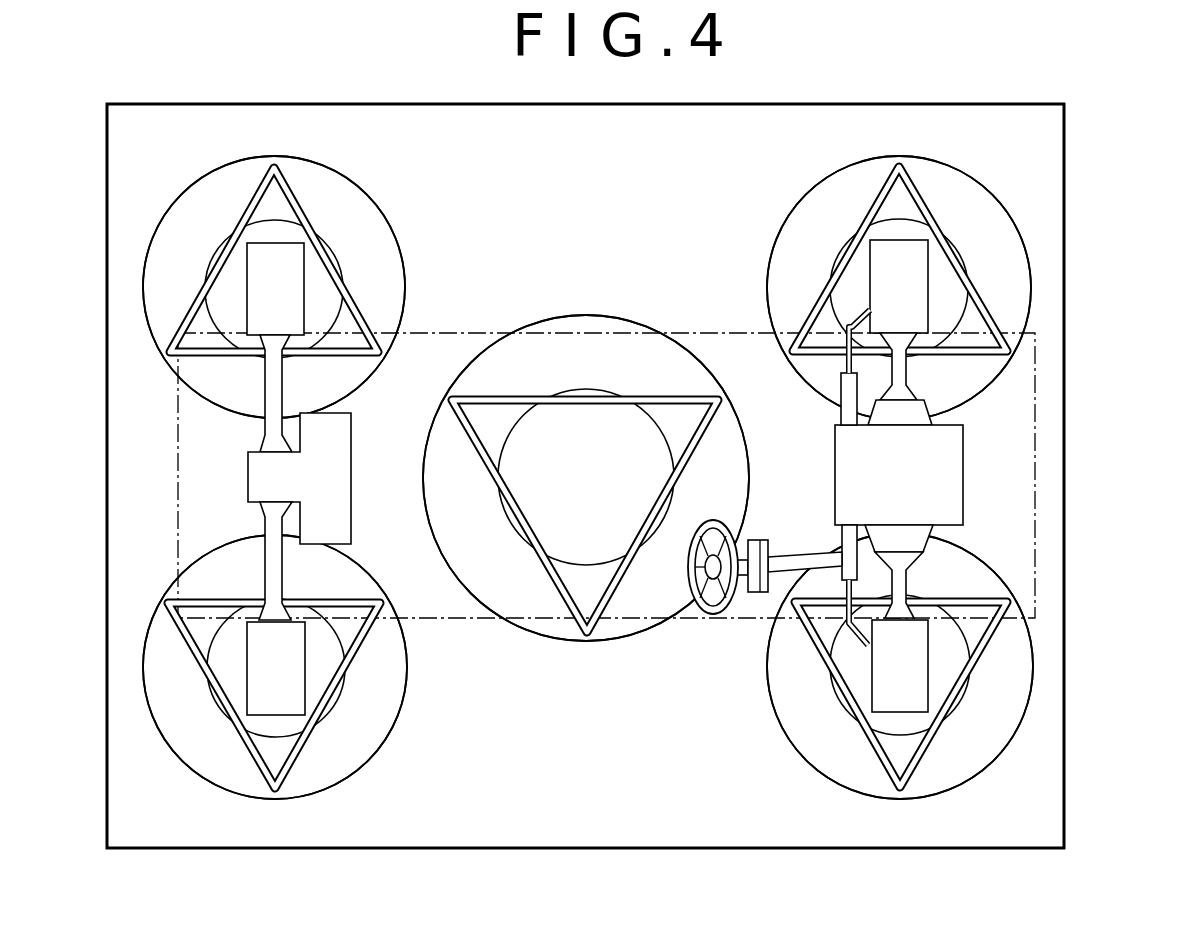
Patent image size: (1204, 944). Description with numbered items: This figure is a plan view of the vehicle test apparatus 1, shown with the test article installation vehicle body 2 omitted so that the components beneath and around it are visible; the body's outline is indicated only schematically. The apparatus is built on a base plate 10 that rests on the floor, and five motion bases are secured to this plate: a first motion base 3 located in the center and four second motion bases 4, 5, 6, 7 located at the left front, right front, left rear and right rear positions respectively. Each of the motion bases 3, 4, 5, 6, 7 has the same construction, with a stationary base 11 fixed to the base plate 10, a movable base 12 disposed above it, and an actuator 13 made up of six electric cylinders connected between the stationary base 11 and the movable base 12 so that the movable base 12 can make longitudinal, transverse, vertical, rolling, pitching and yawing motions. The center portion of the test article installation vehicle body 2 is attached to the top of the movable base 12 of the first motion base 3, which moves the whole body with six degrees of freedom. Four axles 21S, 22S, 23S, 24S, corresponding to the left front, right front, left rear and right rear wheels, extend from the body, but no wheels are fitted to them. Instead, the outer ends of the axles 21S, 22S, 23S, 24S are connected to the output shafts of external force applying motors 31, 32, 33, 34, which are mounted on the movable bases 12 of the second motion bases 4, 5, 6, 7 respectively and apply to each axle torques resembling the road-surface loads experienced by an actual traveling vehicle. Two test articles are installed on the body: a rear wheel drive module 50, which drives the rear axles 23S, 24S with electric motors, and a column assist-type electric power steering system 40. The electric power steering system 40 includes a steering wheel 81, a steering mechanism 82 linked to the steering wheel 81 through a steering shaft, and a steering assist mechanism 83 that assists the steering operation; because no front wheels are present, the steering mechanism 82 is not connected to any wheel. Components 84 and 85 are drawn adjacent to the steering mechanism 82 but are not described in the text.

The vehicle test apparatus 1 is at (1068, 148).
The base plate 10 is at (1066, 202).
The test article installation vehicle body 2 is at (478, 331).
The first motion base 3 is at (590, 311).
The second motion base 4 is at (962, 170).
The second motion base 5 is at (985, 771).
The second motion base 6 is at (338, 170).
The second motion base 7 is at (359, 771).
The stationary base 11 is at (380, 238).
The movable base 12 is at (330, 263).
The actuator 13 is at (247, 211).
The axle 21S is at (898, 376).
The axle 22S is at (920, 562).
The axle 23S is at (274, 382).
The axle 24S is at (277, 572).
The external force applying motor 31 is at (918, 283).
The external force applying motor 32 is at (887, 668).
The external force applying motor 33 is at (293, 283).
The external force applying motor 34 is at (262, 670).
The electric power steering system 40 is at (785, 551).
The rear wheel drive module 50 is at (338, 478).
The steering wheel 81 is at (698, 604).
The steering mechanism 82 is at (834, 412).
The steering assist mechanism 83 is at (755, 584).
The steering actuator 84 is at (840, 358).
The tie rod 85 is at (858, 312).